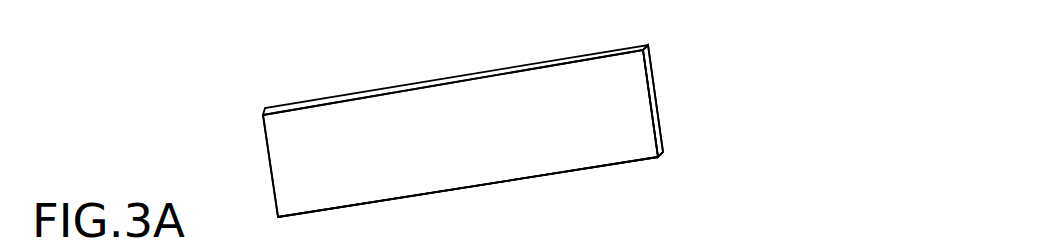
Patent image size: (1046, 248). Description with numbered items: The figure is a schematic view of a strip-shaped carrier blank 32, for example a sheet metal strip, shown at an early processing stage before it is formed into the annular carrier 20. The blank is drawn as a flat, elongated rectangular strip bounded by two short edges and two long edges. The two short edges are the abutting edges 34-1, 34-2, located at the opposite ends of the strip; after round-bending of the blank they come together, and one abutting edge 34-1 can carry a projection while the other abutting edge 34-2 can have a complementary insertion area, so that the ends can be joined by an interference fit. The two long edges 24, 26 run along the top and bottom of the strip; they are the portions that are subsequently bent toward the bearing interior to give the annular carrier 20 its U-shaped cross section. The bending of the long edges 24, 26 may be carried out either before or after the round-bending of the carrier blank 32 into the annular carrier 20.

The annular carrier 20 is at (363, 57).
The long edge 24 is at (449, 82).
The long edge 26 is at (427, 192).
The strip-shaped carrier blank 32 is at (620, 102).
The abutting edge 34-1 is at (267, 140).
The abutting edge 34-2 is at (665, 133).